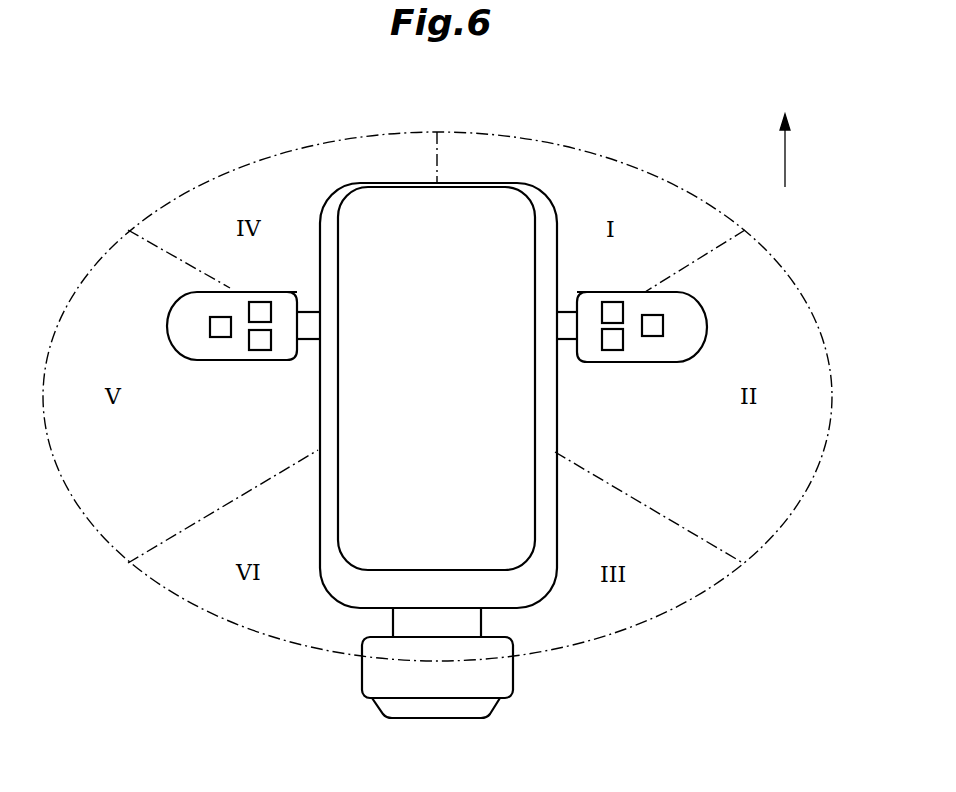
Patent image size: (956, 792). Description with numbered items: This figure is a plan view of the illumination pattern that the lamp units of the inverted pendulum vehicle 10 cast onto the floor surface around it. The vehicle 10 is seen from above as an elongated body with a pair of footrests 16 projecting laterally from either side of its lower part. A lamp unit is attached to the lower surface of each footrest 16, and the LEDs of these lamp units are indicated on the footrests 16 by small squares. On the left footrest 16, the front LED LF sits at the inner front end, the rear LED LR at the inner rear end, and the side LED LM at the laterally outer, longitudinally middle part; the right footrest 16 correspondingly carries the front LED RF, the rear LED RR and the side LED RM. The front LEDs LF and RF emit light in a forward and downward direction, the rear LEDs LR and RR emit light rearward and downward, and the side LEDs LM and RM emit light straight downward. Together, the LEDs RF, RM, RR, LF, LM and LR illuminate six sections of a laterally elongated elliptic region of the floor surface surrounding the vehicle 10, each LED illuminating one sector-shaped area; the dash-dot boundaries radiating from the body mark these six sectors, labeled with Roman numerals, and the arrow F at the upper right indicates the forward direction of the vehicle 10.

The inverted pendulum vehicle 10 is at (454, 388).
The footrest 16 is at (437, 348).
The front LED of the left lamp unit LF is at (258, 294).
The rear LED of the left lamp unit LR is at (258, 358).
The side LED of the left lamp unit LM is at (204, 328).
The front LED of the right lamp unit RF is at (610, 296).
The rear LED of the right lamp unit RR is at (611, 358).
The side LED of the right lamp unit RM is at (668, 327).
The forward direction arrow F is at (784, 136).